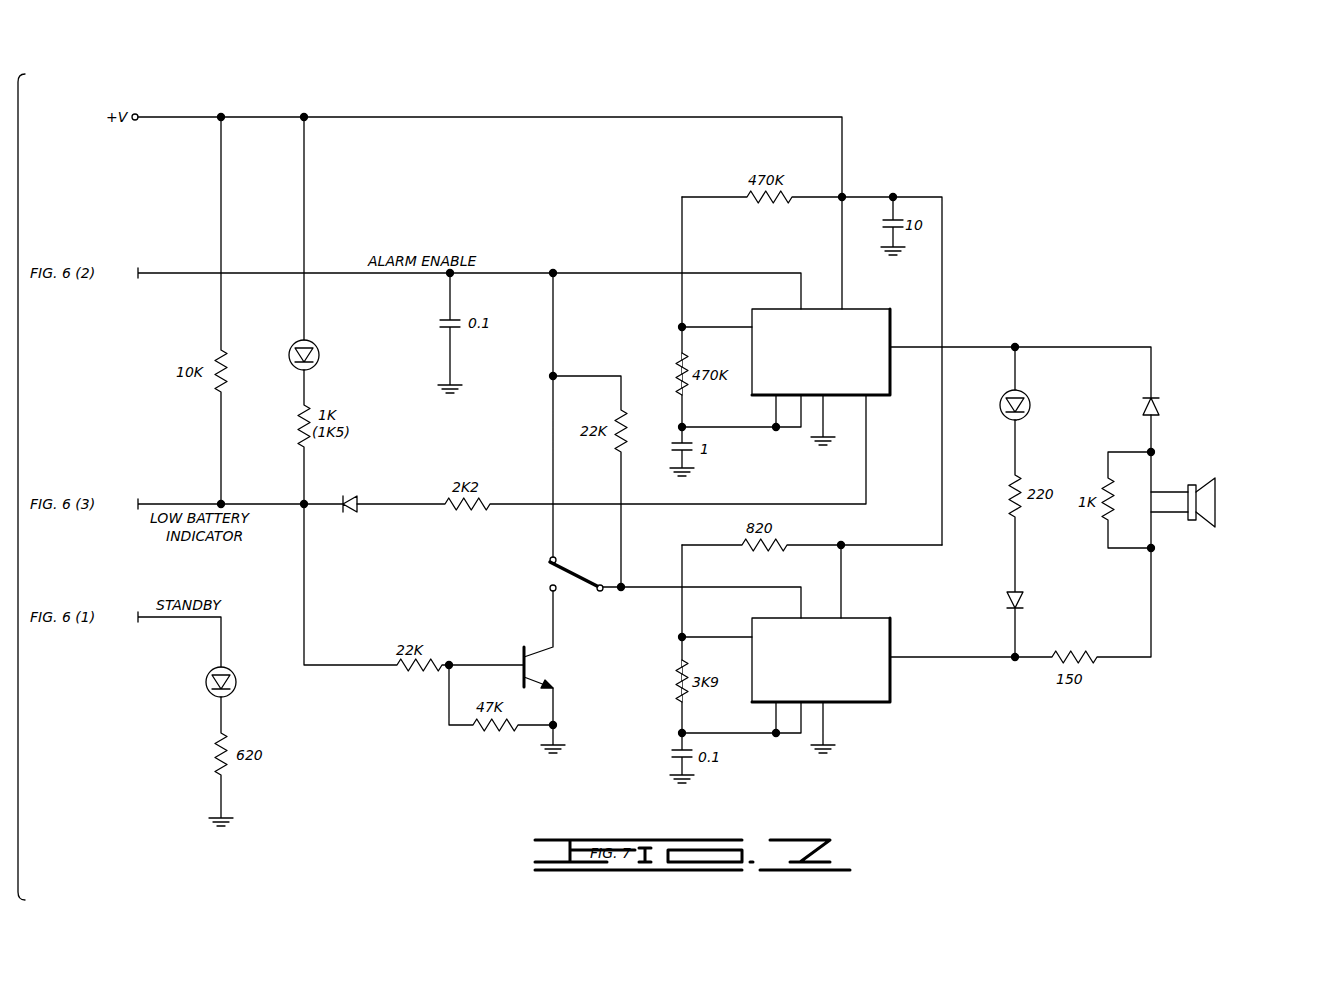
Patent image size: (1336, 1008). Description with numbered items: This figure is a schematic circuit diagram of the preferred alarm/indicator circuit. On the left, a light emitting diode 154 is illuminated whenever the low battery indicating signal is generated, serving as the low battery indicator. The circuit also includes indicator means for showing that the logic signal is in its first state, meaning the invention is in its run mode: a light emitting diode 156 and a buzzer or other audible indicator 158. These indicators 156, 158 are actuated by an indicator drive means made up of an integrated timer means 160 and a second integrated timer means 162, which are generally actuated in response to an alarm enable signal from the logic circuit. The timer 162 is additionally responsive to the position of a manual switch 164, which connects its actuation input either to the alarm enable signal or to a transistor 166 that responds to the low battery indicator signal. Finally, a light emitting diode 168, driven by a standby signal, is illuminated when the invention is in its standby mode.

The light emitting diode 154 is at (320, 352).
The light emitting diode 156 is at (1031, 399).
The buzzer or other audible indicator 158 is at (1216, 487).
The integrated timer means 160 is at (870, 309).
The integrated timer means 162 is at (870, 618).
The manual switch 164 is at (562, 574).
The transistor 166 is at (511, 651).
The light emitting diode 168 is at (236, 678).